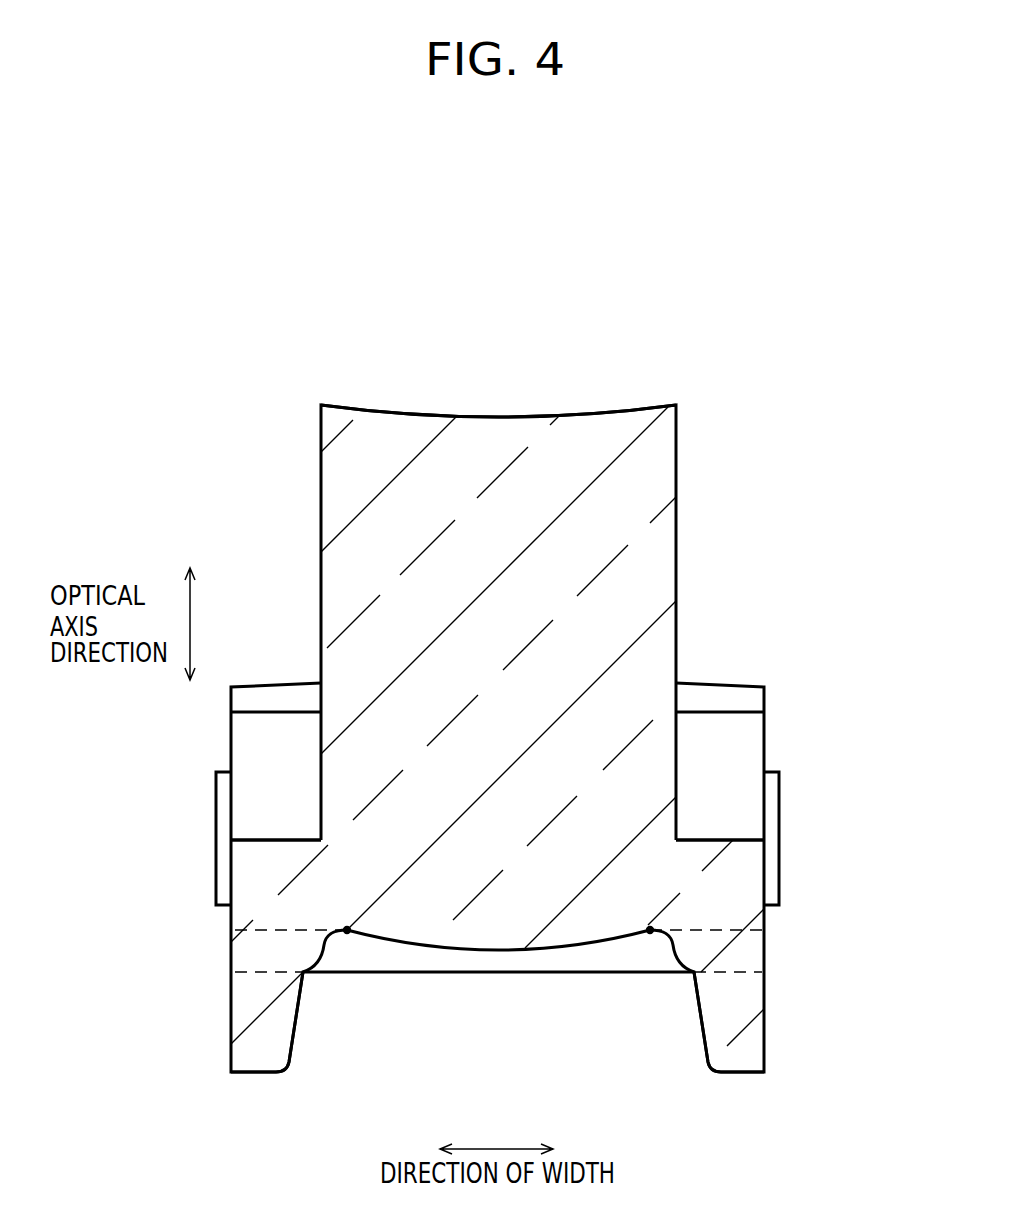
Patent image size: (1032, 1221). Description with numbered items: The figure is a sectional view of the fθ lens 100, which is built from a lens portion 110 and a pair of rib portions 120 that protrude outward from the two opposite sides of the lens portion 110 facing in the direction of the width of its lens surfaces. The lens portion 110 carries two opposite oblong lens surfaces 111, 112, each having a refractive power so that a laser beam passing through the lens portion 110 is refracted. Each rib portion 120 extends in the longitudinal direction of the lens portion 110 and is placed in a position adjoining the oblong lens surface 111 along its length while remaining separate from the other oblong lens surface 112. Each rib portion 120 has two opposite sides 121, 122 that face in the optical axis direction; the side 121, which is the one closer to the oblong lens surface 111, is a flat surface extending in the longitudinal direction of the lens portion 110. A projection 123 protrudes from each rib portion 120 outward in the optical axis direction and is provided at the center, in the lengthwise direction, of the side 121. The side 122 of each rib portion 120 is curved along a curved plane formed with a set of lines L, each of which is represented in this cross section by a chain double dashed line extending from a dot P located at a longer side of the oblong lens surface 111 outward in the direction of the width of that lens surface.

The fθ lens 100 is at (745, 275).
The lens portion 110 is at (591, 395).
The oblong lens surface 111 is at (502, 952).
The oblong lens surface 112 is at (482, 417).
The rib portion 120 is at (735, 676).
The side 121 is at (745, 972).
The side 122 is at (718, 838).
The projection 123 is at (748, 1103).
The line L is at (735, 930).
The dot P is at (640, 1007).